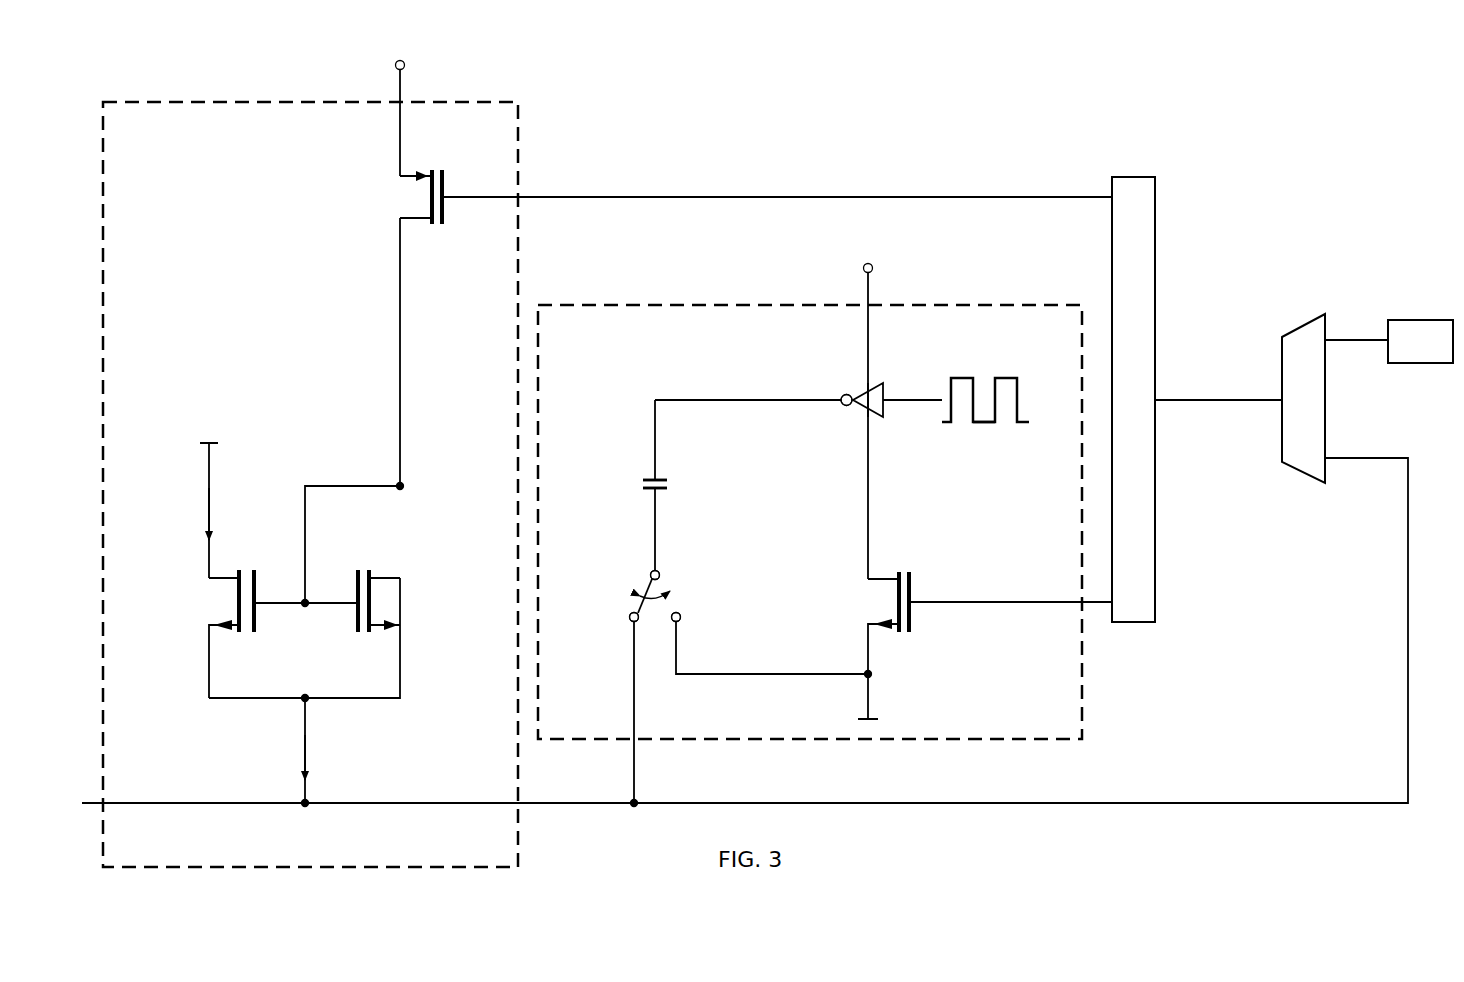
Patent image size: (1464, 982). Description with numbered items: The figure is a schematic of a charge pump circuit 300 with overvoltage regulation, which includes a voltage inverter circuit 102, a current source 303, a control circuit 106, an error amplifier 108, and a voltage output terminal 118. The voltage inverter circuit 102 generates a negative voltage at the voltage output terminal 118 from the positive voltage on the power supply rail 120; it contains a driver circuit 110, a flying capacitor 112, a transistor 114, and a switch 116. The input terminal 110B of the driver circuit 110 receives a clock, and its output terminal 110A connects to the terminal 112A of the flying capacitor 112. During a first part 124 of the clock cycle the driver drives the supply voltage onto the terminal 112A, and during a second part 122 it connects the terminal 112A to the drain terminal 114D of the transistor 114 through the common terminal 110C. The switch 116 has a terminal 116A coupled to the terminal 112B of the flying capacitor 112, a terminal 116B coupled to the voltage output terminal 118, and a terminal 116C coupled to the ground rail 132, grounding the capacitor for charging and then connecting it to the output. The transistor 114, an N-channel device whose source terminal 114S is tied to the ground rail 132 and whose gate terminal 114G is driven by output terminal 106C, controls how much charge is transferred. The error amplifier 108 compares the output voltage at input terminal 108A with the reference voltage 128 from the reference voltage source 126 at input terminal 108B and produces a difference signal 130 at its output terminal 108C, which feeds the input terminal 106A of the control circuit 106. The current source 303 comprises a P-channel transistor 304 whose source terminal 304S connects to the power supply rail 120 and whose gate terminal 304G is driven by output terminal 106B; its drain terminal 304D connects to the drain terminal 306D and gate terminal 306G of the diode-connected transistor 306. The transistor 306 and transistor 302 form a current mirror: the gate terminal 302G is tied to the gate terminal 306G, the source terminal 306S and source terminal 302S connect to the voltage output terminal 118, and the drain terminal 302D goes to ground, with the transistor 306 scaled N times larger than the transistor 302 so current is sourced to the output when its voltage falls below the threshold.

The charge pump circuit 300 is at (1305, 100).
The current source 303 is at (232, 99).
The voltage inverter circuit 102 is at (744, 302).
The voltage output terminal 118 is at (213, 806).
The power supply rail 120 is at (405, 72).
The transistor 304 is at (446, 184).
The source terminal 304S is at (398, 170).
The drain terminal 304D is at (398, 222).
The gate terminal 304G is at (455, 205).
The ground rail 132 is at (207, 460).
The transistor 302 is at (258, 589).
The drain terminal 302D is at (207, 576).
The source terminal 302S is at (207, 632).
The gate terminal 302G is at (264, 607).
The transistor 306 is at (355, 624).
The gate terminal 306G is at (340, 597).
The drain terminal 306D is at (404, 578).
The source terminal 306S is at (404, 630).
The driver circuit 110 is at (888, 414).
The output terminal 110A is at (843, 396).
The input terminal 110B is at (889, 395).
The common terminal 110C is at (866, 422).
The second part of clock cycle 122 is at (963, 378).
The first part of clock cycle 124 is at (989, 424).
The flying capacitor 112 is at (672, 483).
The terminal 112A is at (653, 474).
The terminal 112B is at (653, 494).
The switch 116 is at (647, 590).
The terminal 116A is at (661, 575).
The terminal 116B is at (632, 628).
The terminal 116C is at (679, 630).
The transistor 114 is at (914, 589).
The drain terminal 114D is at (866, 572).
The source terminal 114S is at (866, 632).
The gate terminal 114G is at (925, 606).
The control circuit 106 is at (1133, 176).
The input terminal 106A is at (1170, 398).
The output terminal 106B is at (1100, 196).
The output terminal 106C is at (1100, 606).
The error amplifier 108 is at (1299, 322).
The input terminal 108A is at (1334, 462).
The input terminal 108B is at (1335, 338).
The output terminal 108C is at (1270, 404).
The reference voltage source 126 is at (1420, 320).
The reference voltage 128 is at (1355, 343).
The difference signal 130 is at (1240, 398).